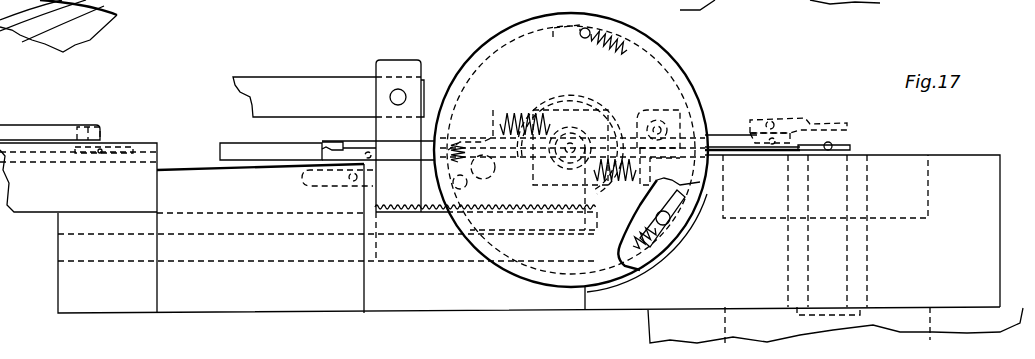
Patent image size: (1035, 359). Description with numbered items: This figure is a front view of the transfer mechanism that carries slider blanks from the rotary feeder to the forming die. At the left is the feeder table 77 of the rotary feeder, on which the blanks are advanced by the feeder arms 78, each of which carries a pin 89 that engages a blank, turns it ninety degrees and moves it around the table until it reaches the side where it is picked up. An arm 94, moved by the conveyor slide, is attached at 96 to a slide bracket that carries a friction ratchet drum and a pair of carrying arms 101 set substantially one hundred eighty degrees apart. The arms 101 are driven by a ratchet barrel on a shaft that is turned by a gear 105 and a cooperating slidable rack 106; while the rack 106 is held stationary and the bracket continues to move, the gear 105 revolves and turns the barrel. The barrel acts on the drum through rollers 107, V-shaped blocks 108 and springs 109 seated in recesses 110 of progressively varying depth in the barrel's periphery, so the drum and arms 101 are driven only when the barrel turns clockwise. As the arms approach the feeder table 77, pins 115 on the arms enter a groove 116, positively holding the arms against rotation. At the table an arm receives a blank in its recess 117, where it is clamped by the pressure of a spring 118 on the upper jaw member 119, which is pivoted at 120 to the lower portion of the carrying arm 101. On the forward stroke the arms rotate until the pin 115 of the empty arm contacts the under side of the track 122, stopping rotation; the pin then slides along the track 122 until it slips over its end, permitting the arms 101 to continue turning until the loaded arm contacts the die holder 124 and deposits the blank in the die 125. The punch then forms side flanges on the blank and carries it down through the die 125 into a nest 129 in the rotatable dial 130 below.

The feeder table 77 is at (143, 197).
The feeder arm 78 is at (20, 130).
The pin 89 is at (85, 127).
The arm 94 is at (320, 87).
The attachment point 96 is at (402, 90).
The carrying arm 101 is at (400, 162).
The gear 105 is at (527, 188).
The slidable rack 106 is at (518, 212).
The roller 107 is at (585, 39).
The V-shaped block 108 is at (603, 45).
The spring 109 is at (627, 47).
The recess 110 is at (565, 31).
The pin 115 is at (366, 152).
The groove 116 is at (240, 157).
The recess 117 is at (327, 146).
The spring 118 is at (513, 110).
The upper jaw member 119 is at (427, 143).
The pivot 120 is at (487, 165).
The track 122 is at (247, 167).
The die holder 124 is at (968, 167).
The die 125 is at (897, 168).
The nest 129 is at (840, 314).
The rotatable dial 130 is at (997, 315).